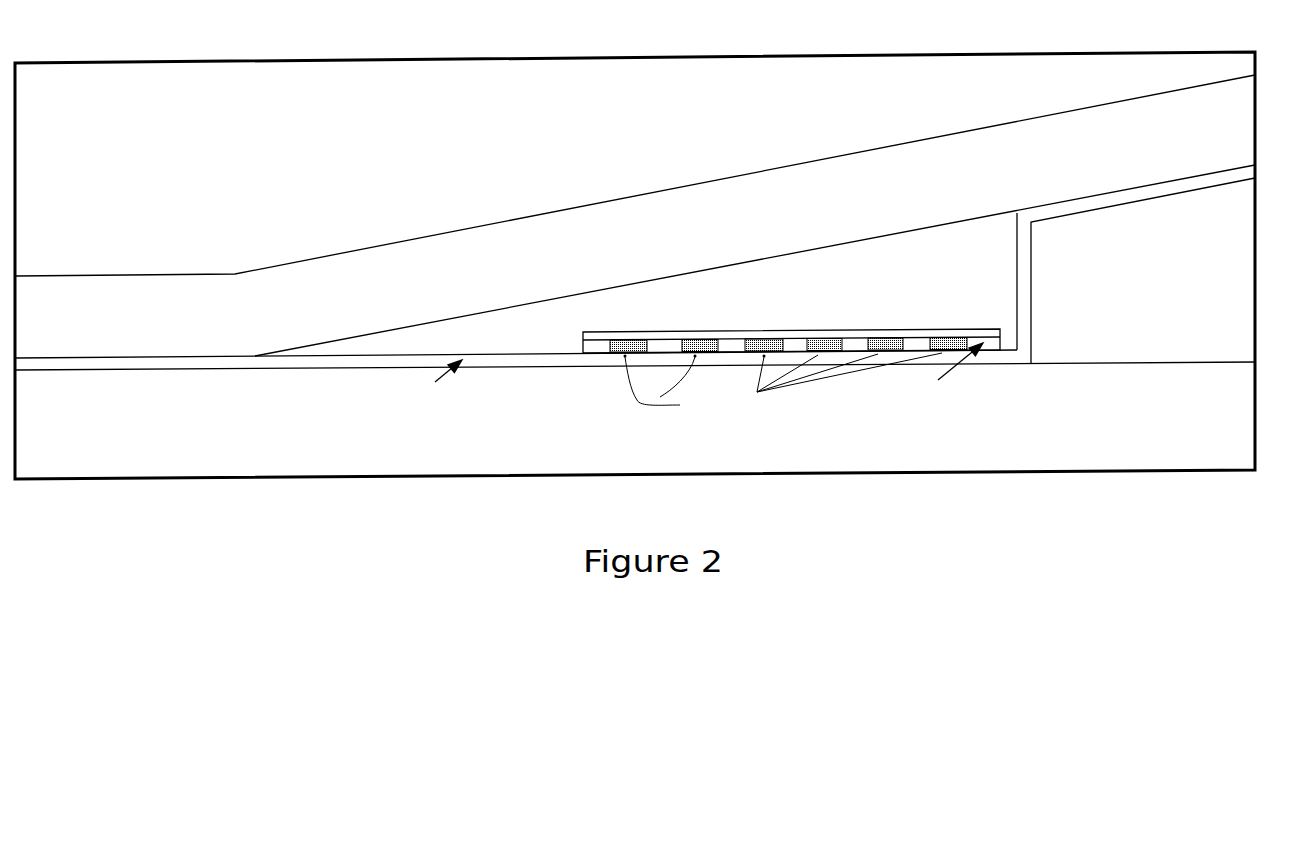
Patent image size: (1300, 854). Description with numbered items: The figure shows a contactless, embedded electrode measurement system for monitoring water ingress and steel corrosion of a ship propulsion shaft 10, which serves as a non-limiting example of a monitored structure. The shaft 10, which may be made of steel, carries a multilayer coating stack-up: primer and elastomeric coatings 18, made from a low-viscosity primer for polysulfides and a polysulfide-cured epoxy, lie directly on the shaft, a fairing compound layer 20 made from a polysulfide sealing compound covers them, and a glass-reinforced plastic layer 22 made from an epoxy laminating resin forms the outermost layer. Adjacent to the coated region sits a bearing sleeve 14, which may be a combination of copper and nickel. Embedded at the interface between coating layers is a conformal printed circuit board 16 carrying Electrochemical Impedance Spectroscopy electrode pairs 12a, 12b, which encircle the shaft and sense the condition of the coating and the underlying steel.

The propulsion shaft 10 is at (1240, 415).
The electrode pair 12a is at (788, 398).
The electrode pair 12b is at (753, 420).
The bearing sleeve 14 is at (1238, 278).
The conformal printed circuit board 16 is at (1003, 393).
The primer and elastomeric coatings 18 is at (392, 408).
The fairing compound layer 20 is at (958, 248).
The glass-reinforced plastic layer 22 is at (1237, 117).